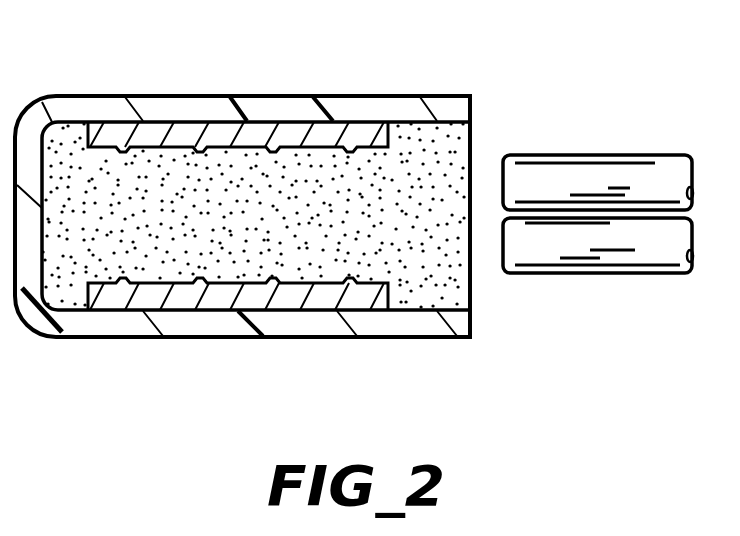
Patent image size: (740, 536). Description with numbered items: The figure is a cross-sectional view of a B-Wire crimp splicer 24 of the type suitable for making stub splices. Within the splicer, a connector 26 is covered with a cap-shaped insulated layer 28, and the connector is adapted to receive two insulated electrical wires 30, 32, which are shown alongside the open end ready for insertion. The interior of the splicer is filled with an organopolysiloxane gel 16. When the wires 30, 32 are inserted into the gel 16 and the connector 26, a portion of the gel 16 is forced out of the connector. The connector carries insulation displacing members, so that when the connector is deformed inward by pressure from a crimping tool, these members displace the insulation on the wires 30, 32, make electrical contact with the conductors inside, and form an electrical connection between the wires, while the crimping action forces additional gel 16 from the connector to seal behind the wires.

The gel 16 is at (182, 223).
The crimp splicer 24 is at (377, 337).
The connector 26 is at (312, 130).
The cap-shaped insulated layer 28 is at (172, 108).
The insulated electrical wire 30 is at (582, 180).
The insulated electrical wire 32 is at (585, 242).